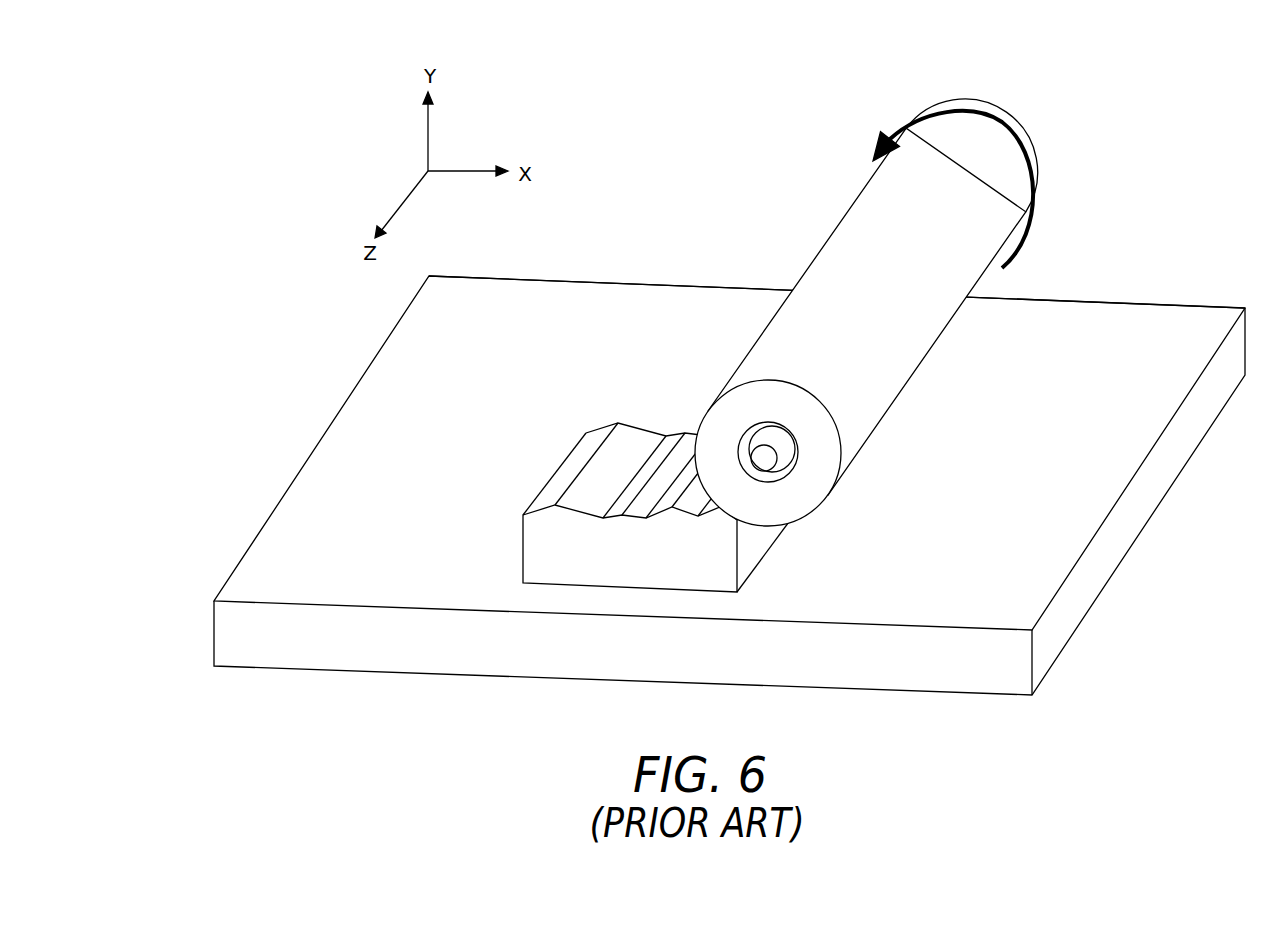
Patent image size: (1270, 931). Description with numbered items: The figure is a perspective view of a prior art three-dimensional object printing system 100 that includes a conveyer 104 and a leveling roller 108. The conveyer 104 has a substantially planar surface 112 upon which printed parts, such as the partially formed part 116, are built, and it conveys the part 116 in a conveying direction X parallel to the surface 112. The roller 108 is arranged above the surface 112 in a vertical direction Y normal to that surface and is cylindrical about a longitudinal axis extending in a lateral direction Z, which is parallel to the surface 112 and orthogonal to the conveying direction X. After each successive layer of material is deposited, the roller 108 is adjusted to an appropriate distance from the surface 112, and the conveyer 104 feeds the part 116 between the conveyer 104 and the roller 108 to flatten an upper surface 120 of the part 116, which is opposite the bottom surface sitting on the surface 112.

The three-dimensional object printing system 100 is at (668, 126).
The conveyer 104 is at (451, 663).
The leveling roller 108 is at (838, 250).
The surface 112 is at (593, 300).
The partially formed part 116 is at (627, 487).
The upper surface 120 is at (656, 442).